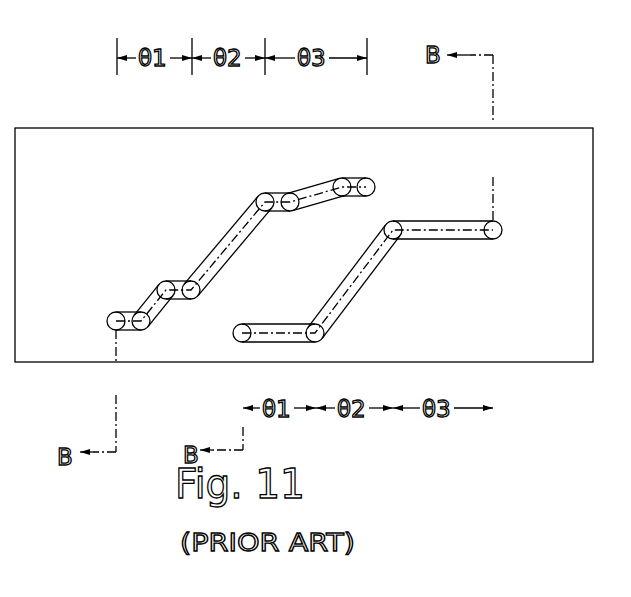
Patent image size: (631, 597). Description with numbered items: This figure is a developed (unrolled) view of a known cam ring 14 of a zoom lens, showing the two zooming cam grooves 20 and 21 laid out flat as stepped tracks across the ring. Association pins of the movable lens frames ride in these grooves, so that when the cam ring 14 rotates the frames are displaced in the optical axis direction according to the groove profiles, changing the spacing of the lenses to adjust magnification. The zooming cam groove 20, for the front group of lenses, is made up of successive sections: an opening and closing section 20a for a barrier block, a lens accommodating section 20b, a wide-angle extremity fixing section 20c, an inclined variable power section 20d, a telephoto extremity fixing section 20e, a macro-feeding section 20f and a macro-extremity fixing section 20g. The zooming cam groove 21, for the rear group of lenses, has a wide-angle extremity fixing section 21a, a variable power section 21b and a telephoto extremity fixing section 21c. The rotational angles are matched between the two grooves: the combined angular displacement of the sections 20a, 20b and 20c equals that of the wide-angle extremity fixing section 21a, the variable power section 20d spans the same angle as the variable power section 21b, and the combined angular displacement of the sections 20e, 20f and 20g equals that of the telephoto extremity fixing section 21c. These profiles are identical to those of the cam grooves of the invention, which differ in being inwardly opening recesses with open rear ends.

The cam ring 14 is at (516, 135).
The zooming cam groove 20 is at (267, 233).
The zooming cam groove 21 is at (348, 260).
The opening and closing section 20a is at (141, 312).
The lens accommodating section 20b is at (182, 237).
The wide-angle extremity fixing section 20c is at (191, 281).
The variable power section 20d is at (265, 164).
The telephoto extremity fixing section 20e is at (290, 193).
The macro-feeding section 20f is at (316, 179).
The macro-extremity fixing section 20g is at (366, 178).
The wide-angle extremity fixing section 21a is at (316, 342).
The variable power section 21b is at (393, 239).
The telephoto extremity fixing section 21c is at (493, 239).